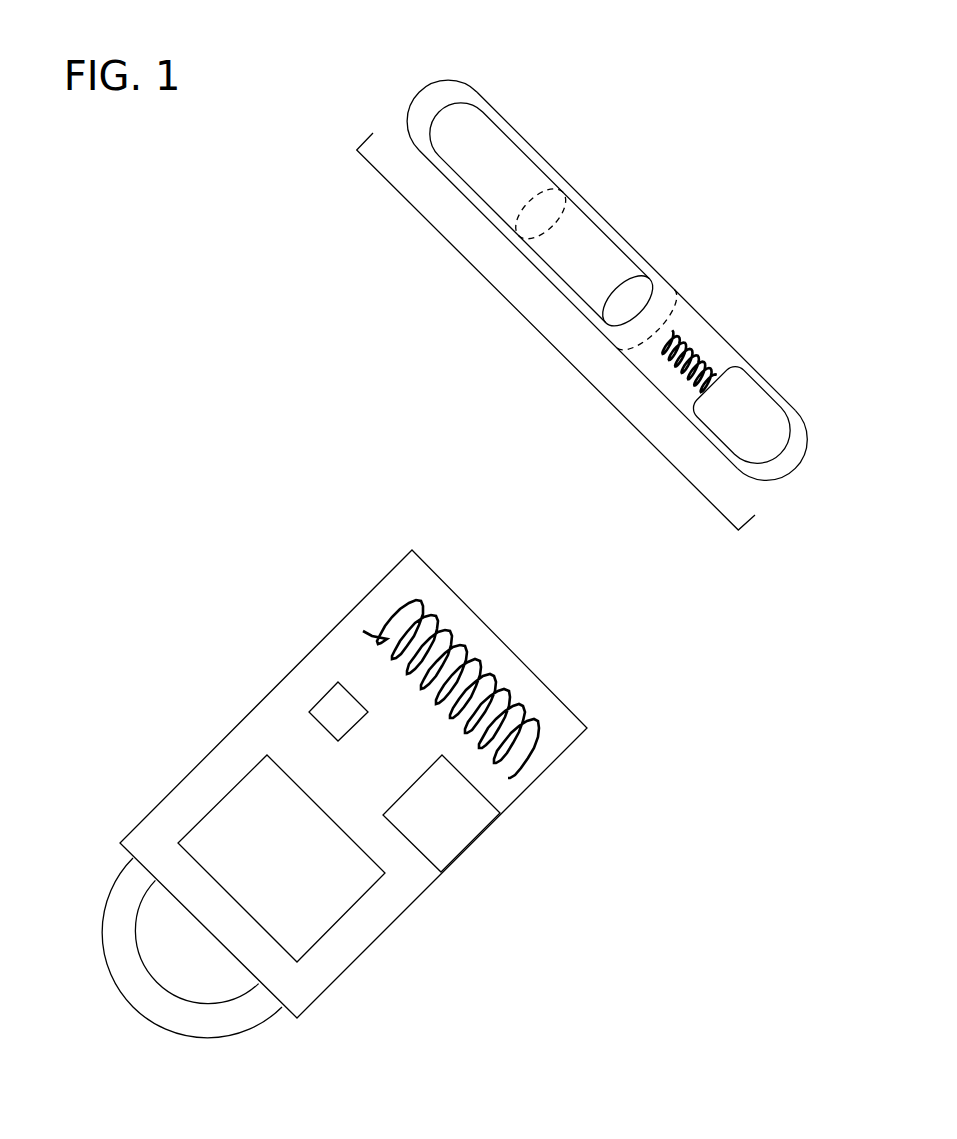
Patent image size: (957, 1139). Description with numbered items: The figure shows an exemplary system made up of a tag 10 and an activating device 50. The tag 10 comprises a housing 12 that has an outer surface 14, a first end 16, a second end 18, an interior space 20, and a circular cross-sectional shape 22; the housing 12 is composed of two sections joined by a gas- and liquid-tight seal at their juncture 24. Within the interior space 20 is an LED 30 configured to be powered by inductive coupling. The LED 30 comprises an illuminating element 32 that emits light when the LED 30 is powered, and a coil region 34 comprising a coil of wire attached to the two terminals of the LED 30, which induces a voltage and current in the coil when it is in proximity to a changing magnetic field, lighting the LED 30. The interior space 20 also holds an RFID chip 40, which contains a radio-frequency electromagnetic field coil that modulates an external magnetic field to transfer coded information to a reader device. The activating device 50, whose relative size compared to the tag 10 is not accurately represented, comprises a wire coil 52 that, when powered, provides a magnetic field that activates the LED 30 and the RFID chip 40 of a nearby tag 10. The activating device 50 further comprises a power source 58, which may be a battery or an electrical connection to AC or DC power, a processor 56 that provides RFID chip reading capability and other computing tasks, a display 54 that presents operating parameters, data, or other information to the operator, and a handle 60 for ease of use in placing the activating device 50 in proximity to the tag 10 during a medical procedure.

The tag 10 is at (548, 340).
The housing 12 is at (607, 282).
The outer surface 14 is at (618, 233).
The first end 16 is at (410, 90).
The second end 18 is at (802, 477).
The interior space 20 is at (511, 213).
The circular cross-sectional shape 22 is at (572, 200).
The juncture 24 is at (647, 287).
The LED 30 is at (780, 409).
The illuminating element 32 is at (752, 412).
The coil region 34 is at (703, 353).
The RFID chip 40 is at (457, 135).
The activating device 50 is at (225, 659).
The wire coil 52 is at (383, 602).
The display 54 is at (248, 805).
The processor 56 is at (332, 705).
The power source 58 is at (457, 828).
The handle 60 is at (125, 907).